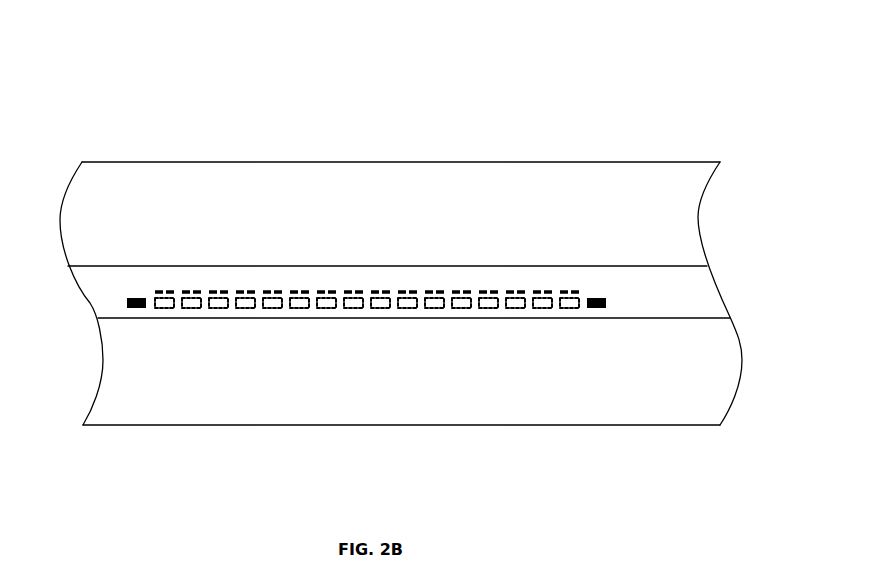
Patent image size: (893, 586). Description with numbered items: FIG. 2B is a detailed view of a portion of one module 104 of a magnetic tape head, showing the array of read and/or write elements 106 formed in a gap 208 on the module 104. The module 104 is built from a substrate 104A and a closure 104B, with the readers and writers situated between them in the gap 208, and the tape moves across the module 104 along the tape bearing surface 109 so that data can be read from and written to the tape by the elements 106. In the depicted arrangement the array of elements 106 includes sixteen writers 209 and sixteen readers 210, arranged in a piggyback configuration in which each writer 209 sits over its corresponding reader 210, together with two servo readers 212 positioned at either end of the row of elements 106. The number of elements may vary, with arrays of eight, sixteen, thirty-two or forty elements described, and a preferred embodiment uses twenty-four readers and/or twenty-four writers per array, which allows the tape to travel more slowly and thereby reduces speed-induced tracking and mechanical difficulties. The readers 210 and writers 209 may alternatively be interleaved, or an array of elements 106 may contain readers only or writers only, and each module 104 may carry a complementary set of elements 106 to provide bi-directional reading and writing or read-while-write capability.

The module 104 is at (410, 272).
The substrate 104A is at (190, 162).
The closure 104B is at (245, 425).
The tape bearing surface 109 is at (325, 232).
The gap 208 is at (715, 290).
The read and/or write elements 106 is at (374, 294).
The writers 209 is at (517, 291).
The readers 210 is at (517, 309).
The servo readers 212 is at (128, 302).